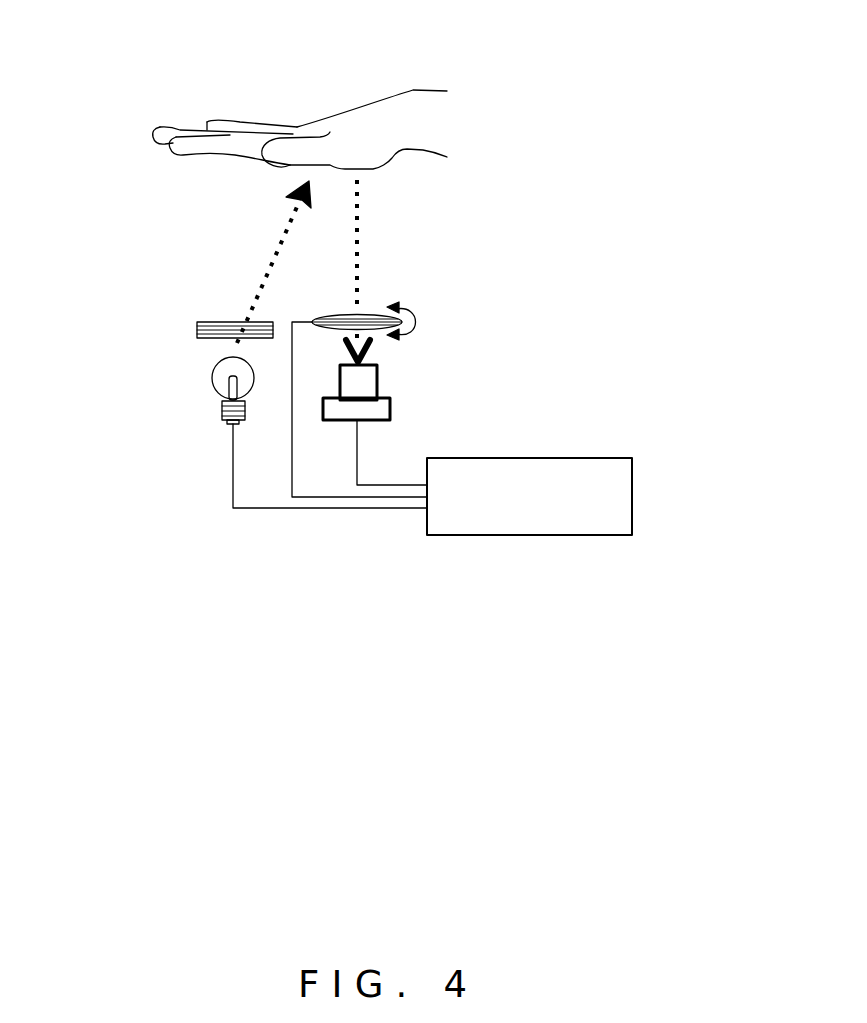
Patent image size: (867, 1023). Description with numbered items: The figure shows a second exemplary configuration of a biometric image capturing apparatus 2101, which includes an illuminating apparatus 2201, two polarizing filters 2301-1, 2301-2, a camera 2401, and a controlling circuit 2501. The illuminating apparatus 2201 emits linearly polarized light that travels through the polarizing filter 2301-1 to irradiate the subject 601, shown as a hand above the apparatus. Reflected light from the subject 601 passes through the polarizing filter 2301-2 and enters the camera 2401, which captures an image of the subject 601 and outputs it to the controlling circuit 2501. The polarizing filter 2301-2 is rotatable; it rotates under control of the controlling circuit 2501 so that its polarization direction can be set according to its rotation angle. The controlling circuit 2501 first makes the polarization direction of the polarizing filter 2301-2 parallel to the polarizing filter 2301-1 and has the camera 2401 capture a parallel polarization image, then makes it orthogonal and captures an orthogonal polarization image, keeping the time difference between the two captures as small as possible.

The subject 601 is at (423, 107).
The biometric image capturing apparatus 2101 is at (650, 387).
The illuminating apparatus 2201 is at (222, 401).
The polarizing filter 2301-1 is at (197, 327).
The polarizing filter 2301-2 is at (370, 330).
The camera 2401 is at (390, 412).
The controlling circuit 2501 is at (633, 490).